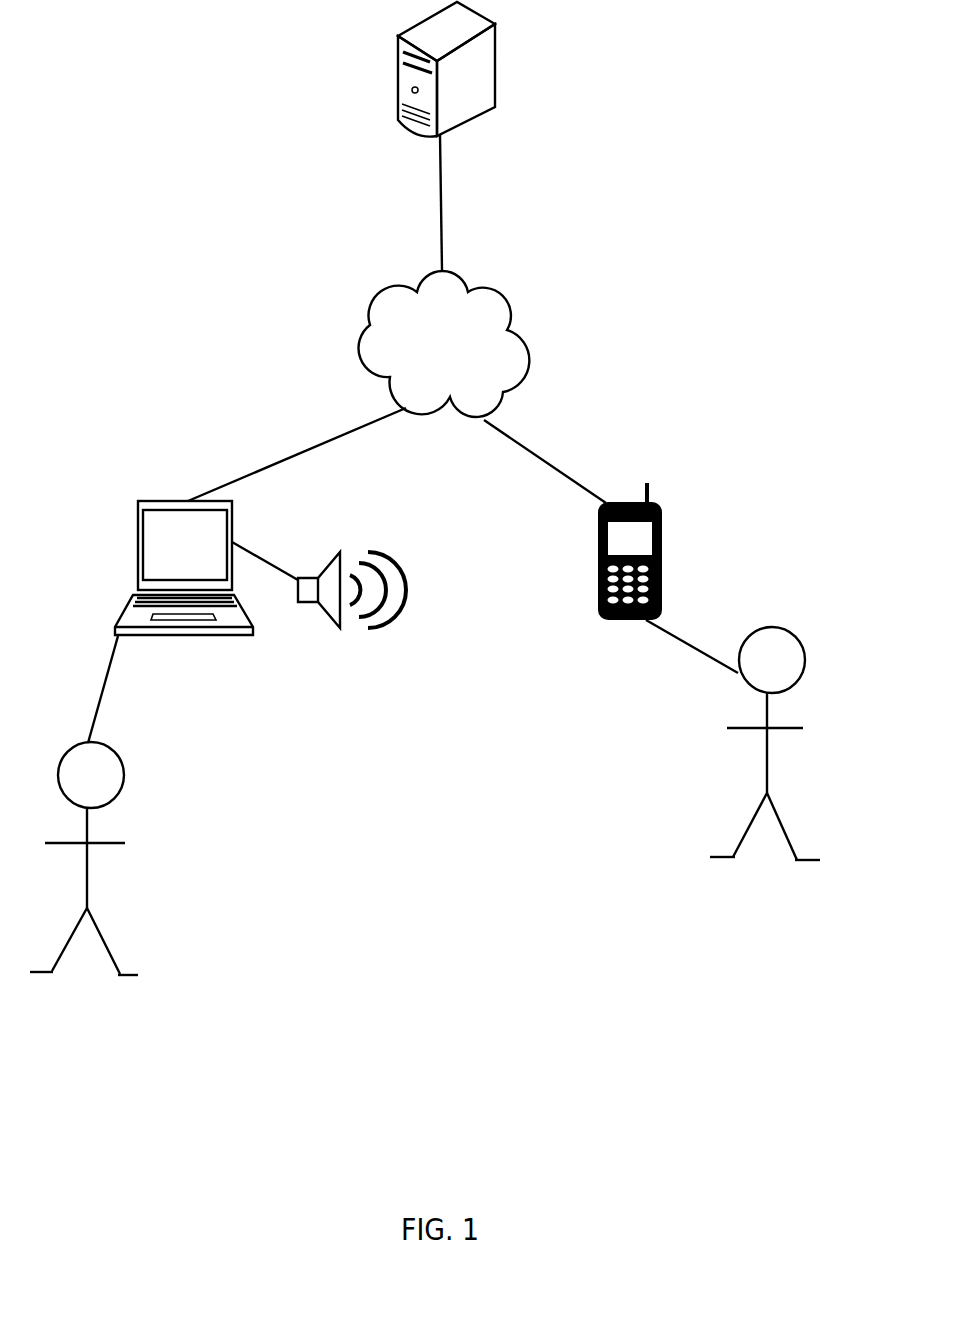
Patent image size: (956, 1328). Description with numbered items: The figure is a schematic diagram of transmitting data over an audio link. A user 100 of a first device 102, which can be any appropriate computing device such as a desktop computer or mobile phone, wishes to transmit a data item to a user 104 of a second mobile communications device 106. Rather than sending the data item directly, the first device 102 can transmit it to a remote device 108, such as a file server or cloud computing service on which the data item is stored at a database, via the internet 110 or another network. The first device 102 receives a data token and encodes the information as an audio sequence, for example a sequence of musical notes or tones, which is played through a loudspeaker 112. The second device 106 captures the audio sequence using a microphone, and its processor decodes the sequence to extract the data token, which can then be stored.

The user 100 is at (120, 760).
The first device 102 is at (138, 522).
The user 104 is at (788, 627).
The second mobile communications device 106 is at (662, 522).
The remote device 108 is at (398, 52).
The internet 110 is at (370, 310).
The loudspeaker 112 is at (330, 627).